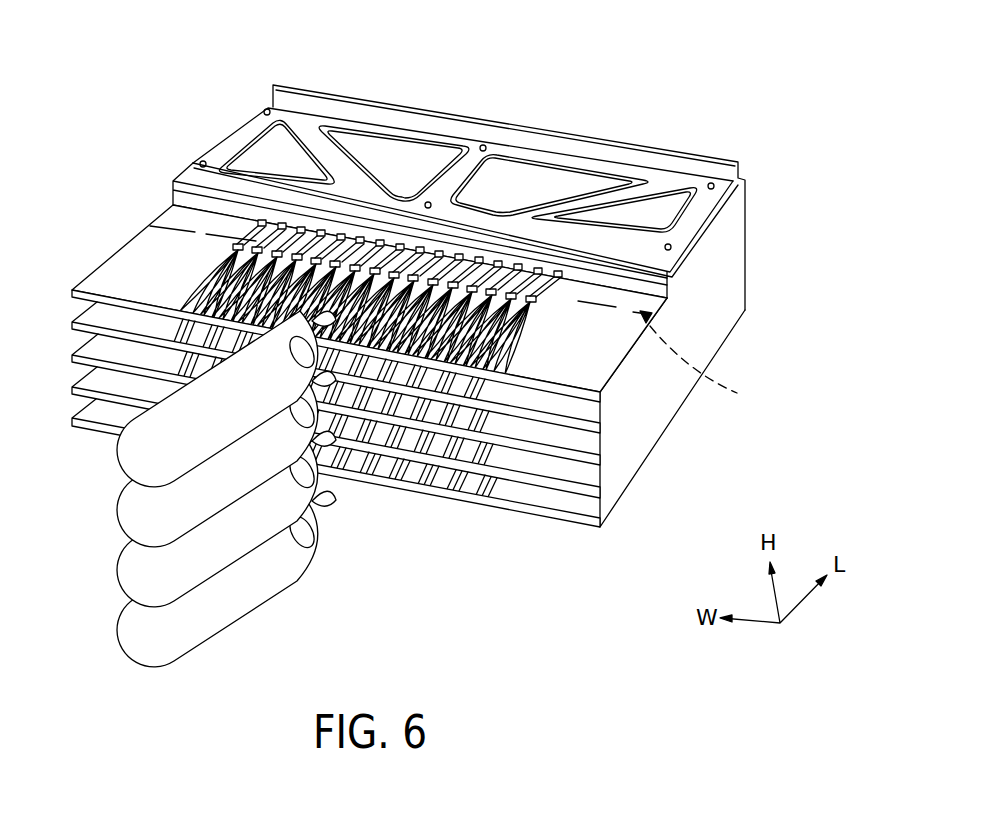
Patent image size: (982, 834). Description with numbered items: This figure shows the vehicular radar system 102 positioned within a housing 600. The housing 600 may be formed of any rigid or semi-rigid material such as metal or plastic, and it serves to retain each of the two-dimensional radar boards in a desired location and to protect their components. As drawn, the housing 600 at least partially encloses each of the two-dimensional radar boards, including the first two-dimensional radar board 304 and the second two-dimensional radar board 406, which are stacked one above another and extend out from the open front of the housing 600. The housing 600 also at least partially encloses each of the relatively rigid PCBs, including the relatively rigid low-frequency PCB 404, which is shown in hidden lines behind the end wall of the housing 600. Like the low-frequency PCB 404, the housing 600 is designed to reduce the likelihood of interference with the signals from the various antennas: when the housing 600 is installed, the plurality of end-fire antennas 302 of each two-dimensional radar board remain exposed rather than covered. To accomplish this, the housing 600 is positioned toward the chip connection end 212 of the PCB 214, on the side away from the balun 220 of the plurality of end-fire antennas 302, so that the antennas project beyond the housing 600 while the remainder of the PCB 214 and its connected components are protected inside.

The vehicular radar system 102 is at (722, 93).
The chip connection end 212 is at (265, 108).
The PCB 214 is at (592, 368).
The balun 220 is at (540, 304).
The plurality of end-fire antennas 302 is at (503, 354).
The first two-dimensional radar board 304 is at (142, 251).
The relatively rigid low-frequency PCB 404 is at (696, 368).
The second two-dimensional radar board 406 is at (103, 323).
The housing 600 is at (737, 203).